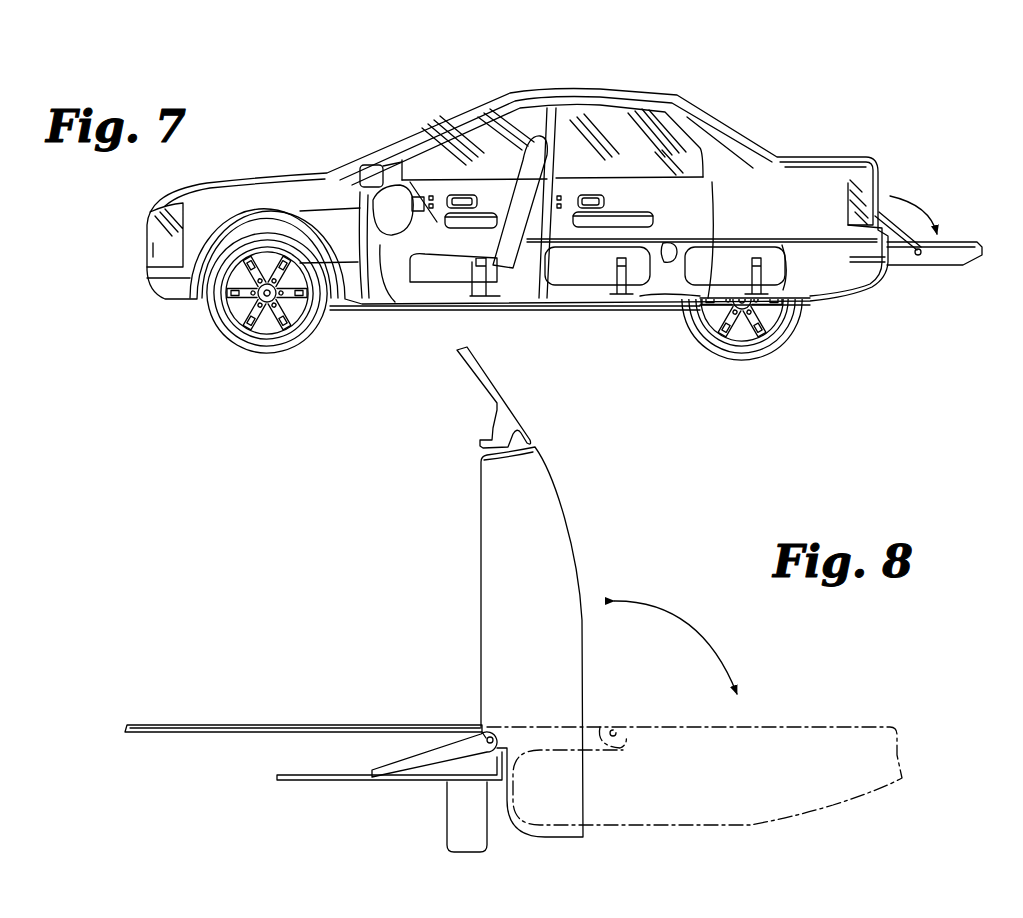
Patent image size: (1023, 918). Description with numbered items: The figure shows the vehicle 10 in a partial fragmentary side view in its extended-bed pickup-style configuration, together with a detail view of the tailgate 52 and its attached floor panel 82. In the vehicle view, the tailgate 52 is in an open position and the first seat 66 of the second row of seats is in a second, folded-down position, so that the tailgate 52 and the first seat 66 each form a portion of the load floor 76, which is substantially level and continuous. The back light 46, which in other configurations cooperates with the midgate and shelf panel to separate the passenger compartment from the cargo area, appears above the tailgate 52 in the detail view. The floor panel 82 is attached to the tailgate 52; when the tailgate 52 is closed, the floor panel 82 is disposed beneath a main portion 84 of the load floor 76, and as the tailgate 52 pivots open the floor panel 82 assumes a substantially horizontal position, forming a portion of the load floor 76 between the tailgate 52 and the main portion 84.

In FIG. 7, the vehicle 10 is at (339, 116).
In FIG. 7, the load floor 76 is at (772, 240).
In FIG. 8, the load floor 76 is at (236, 723).
In FIG. 7, the first seat 66 is at (663, 290).
In FIG. 7, the tailgate 52 is at (913, 267).
In FIG. 8, the tailgate 52 is at (568, 526).
In FIG. 8, the back light 46 is at (497, 387).
In FIG. 8, the main portion of the load floor 84 is at (349, 724).
In FIG. 8, the floor panel 82 is at (412, 757).